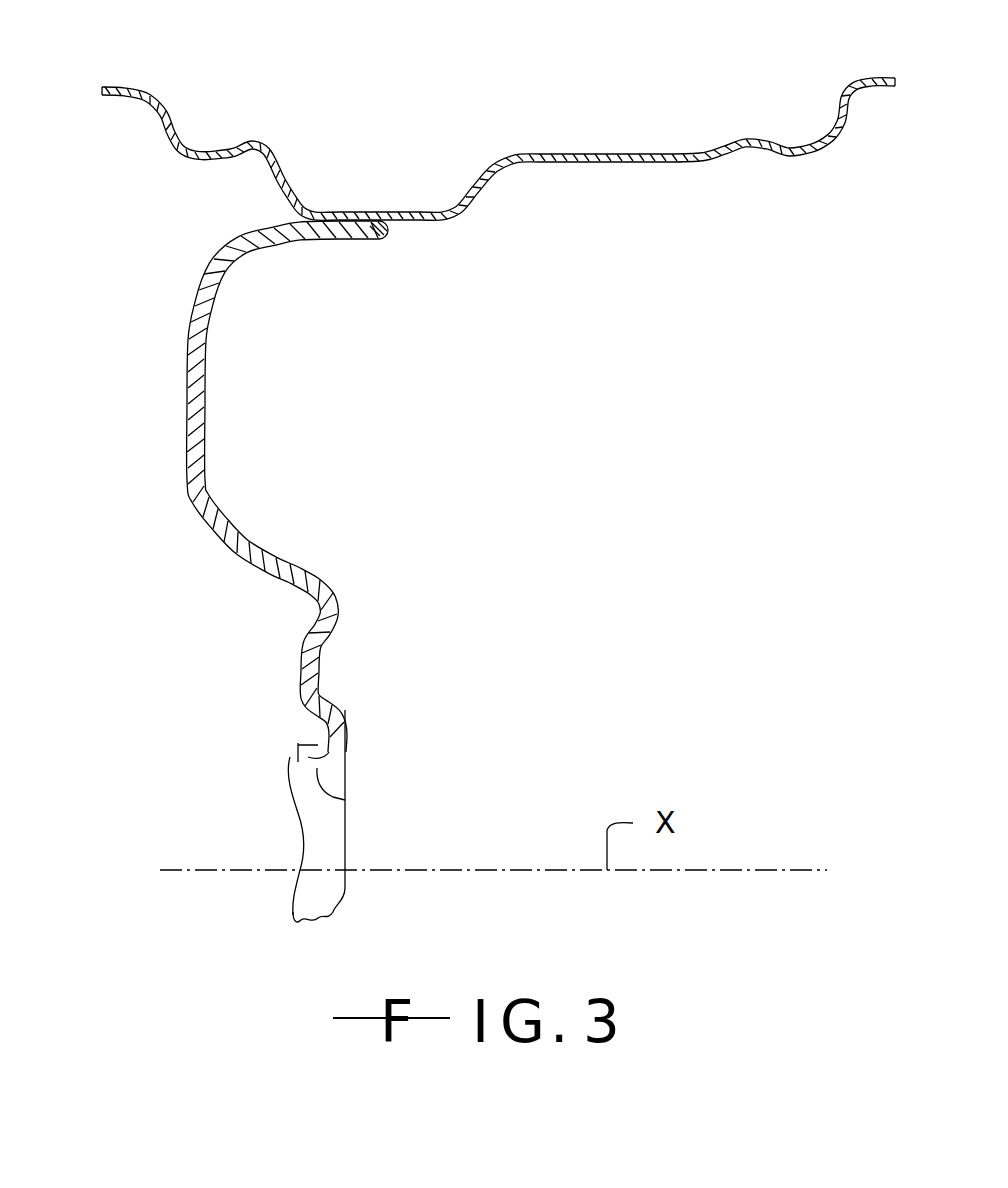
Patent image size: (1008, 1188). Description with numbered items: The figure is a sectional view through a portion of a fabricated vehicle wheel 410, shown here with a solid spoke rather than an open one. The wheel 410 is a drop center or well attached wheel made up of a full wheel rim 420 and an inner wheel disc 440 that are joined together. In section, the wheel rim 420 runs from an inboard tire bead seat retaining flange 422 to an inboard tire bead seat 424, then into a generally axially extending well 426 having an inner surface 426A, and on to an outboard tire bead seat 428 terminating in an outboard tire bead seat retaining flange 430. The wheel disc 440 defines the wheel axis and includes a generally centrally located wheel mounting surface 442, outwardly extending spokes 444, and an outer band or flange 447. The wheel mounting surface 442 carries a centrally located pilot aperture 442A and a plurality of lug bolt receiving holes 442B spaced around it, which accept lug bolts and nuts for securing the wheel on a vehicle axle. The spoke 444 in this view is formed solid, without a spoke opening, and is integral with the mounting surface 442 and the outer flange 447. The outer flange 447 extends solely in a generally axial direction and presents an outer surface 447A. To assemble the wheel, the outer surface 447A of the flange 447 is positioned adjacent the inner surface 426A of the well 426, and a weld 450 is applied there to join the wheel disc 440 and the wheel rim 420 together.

The fabricated vehicle wheel 410 is at (150, 533).
The wheel rim 420 is at (618, 178).
The inboard tire bead seat retaining flange 422 is at (843, 95).
The inboard tire bead seat 424 is at (800, 140).
The well 426 is at (583, 157).
The inner surface of the well 426A is at (417, 224).
The outboard tire bead seat 428 is at (193, 147).
The outboard tire bead seat retaining flange 430 is at (160, 103).
The wheel disc 440 is at (224, 503).
The wheel mounting surface 442 is at (348, 743).
The pilot aperture 442A is at (320, 787).
The lug bolt receiving hole 442B is at (313, 660).
The spoke 444 is at (187, 447).
The outer flange 447 is at (311, 240).
The outer surface of the outer flange 447A is at (330, 217).
The weld 450 is at (383, 230).